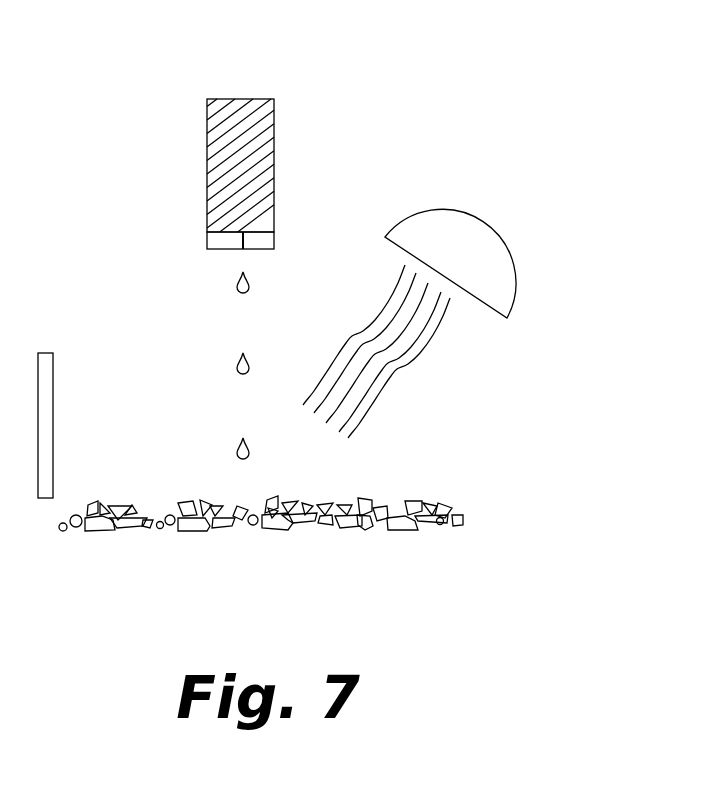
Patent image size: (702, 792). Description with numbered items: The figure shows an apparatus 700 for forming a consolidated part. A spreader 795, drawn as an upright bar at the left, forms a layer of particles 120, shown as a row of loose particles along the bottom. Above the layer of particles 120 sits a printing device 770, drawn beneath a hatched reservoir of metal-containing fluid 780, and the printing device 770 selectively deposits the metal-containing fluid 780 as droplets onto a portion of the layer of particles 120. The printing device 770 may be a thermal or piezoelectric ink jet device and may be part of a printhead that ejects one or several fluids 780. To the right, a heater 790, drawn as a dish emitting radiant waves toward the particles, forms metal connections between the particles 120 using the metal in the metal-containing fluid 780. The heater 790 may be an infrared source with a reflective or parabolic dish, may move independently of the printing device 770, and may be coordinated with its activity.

The apparatus 700 is at (182, 60).
The metal-containing fluid 780 is at (257, 119).
The printing device 770 is at (267, 227).
The heater 790 is at (482, 246).
The spreader 795 is at (52, 375).
The layer of particles 120 is at (446, 484).